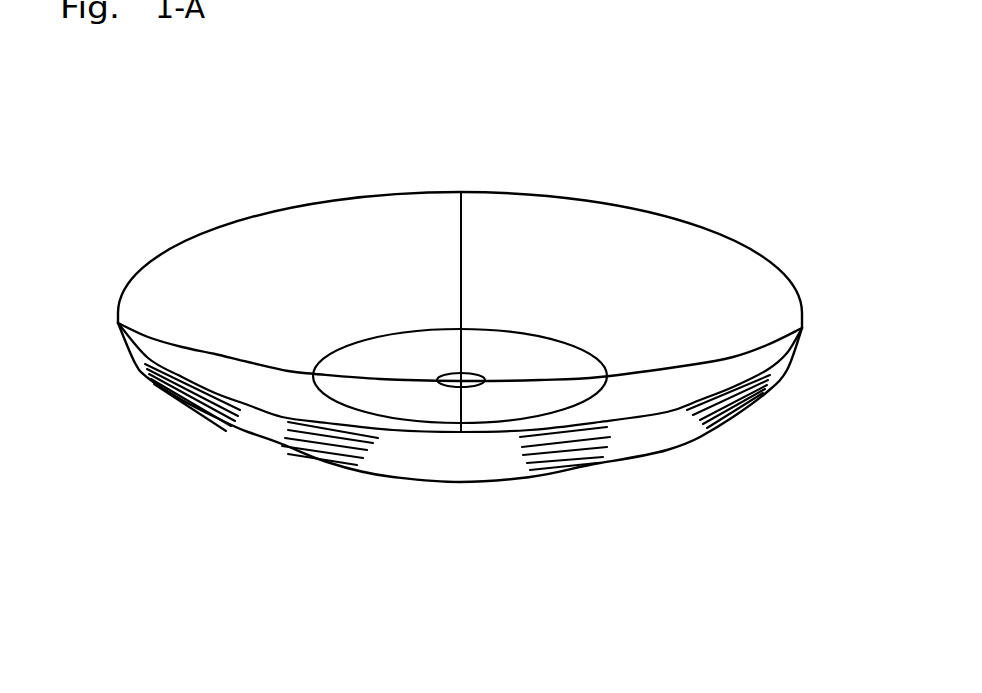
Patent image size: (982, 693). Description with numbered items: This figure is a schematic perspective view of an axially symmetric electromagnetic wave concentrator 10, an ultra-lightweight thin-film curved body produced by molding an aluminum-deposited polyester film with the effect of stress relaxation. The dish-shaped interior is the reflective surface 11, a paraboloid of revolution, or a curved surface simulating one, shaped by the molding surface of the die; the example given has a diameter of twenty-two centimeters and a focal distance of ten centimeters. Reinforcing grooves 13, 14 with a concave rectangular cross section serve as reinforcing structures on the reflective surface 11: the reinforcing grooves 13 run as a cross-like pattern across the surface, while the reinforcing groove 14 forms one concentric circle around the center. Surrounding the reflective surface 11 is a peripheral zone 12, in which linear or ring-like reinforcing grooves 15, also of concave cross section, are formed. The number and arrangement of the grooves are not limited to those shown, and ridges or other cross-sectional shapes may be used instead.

The electromagnetic wave concentrator 10 is at (763, 113).
The reflective surface 11 is at (270, 252).
The peripheral zone 12 is at (762, 255).
The reinforcing grooves 13 is at (688, 366).
The reinforcing groove 14 is at (580, 403).
The reinforcing grooves 15 is at (667, 410).